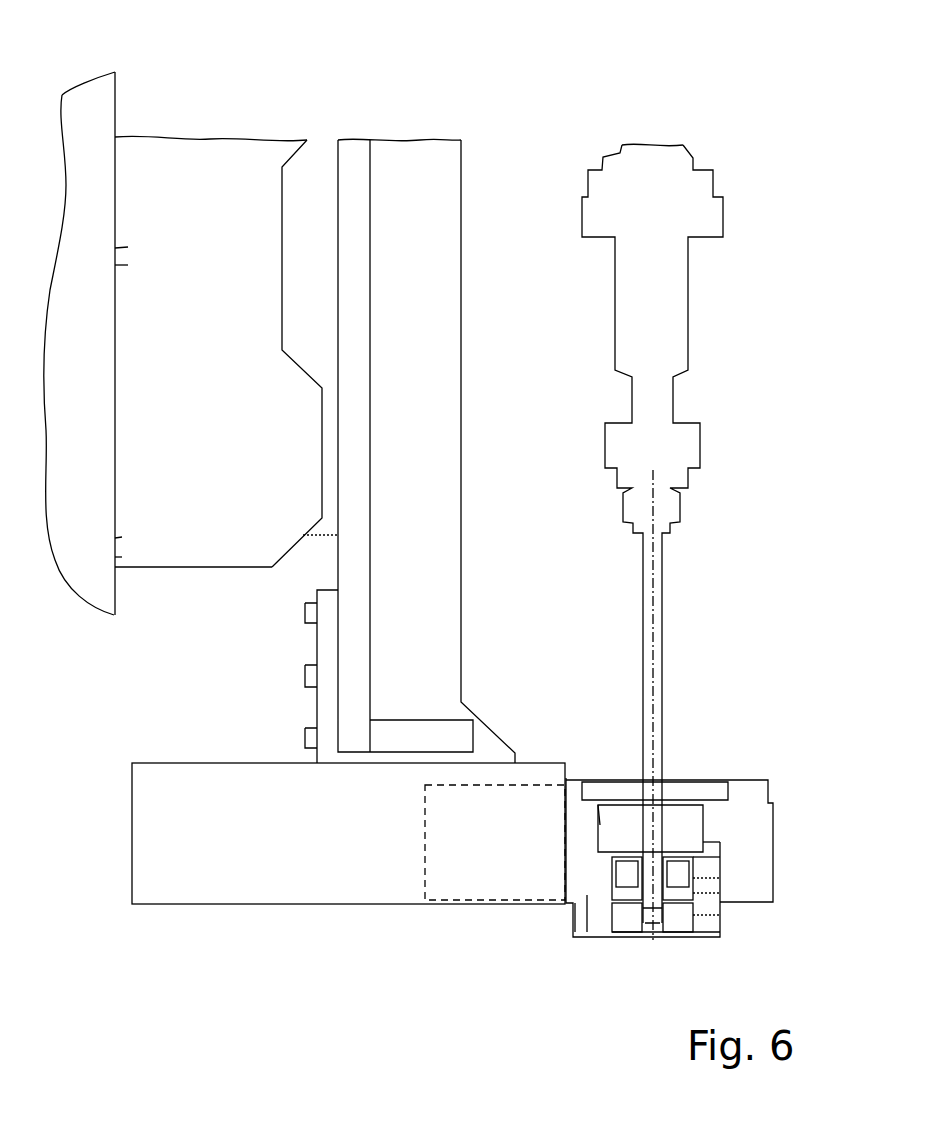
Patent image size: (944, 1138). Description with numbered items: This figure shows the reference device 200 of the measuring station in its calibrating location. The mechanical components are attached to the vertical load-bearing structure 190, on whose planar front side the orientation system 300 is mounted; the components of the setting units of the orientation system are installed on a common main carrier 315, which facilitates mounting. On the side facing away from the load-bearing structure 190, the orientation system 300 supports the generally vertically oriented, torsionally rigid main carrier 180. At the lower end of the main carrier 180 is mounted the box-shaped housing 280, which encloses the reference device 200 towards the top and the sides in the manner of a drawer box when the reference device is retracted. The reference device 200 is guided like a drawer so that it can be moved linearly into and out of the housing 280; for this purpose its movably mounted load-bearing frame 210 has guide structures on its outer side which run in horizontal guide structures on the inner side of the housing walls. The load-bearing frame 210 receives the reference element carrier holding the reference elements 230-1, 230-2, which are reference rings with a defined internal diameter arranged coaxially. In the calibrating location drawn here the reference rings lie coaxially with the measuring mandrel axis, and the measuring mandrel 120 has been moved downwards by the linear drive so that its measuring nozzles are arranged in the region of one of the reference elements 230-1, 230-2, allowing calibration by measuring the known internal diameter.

The load-bearing structure 190 is at (82, 103).
The orientation system 300 is at (226, 328).
The main carrier 315 is at (210, 558).
The main carrier 180 is at (400, 160).
The housing 280 is at (348, 833).
The reference device 200 is at (477, 890).
The measuring mandrel 120 is at (657, 607).
The load-bearing frame 210 is at (745, 790).
The reference element 230-1 is at (688, 868).
The reference element 230-2 is at (687, 913).